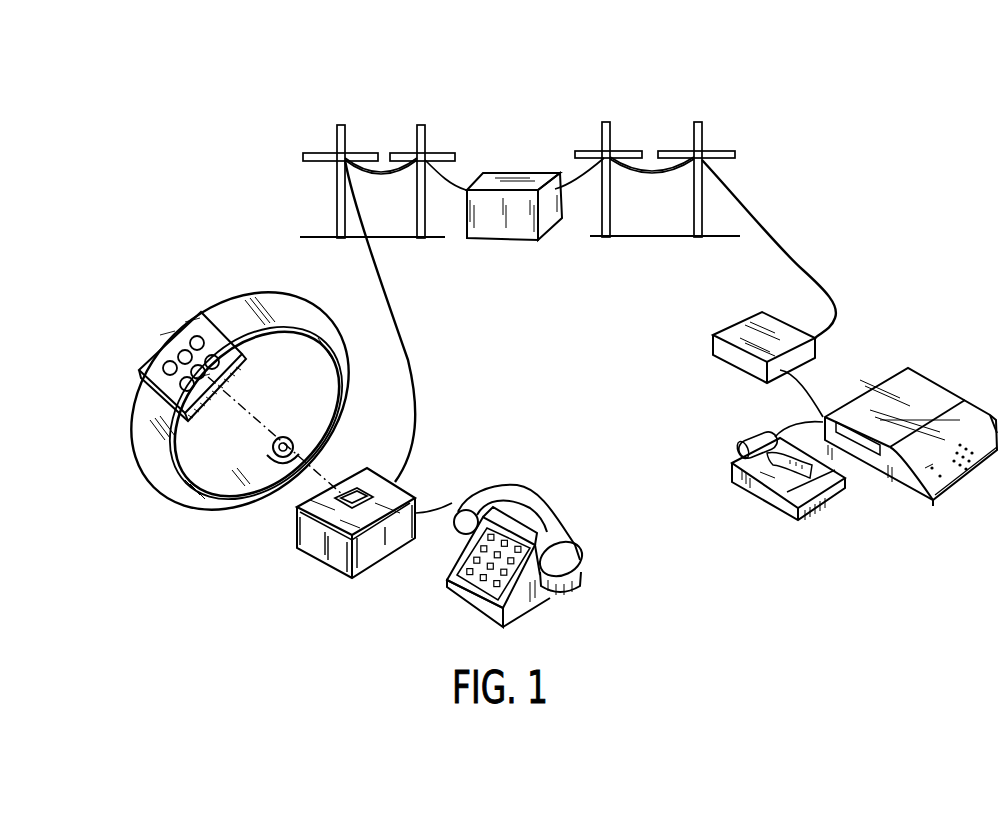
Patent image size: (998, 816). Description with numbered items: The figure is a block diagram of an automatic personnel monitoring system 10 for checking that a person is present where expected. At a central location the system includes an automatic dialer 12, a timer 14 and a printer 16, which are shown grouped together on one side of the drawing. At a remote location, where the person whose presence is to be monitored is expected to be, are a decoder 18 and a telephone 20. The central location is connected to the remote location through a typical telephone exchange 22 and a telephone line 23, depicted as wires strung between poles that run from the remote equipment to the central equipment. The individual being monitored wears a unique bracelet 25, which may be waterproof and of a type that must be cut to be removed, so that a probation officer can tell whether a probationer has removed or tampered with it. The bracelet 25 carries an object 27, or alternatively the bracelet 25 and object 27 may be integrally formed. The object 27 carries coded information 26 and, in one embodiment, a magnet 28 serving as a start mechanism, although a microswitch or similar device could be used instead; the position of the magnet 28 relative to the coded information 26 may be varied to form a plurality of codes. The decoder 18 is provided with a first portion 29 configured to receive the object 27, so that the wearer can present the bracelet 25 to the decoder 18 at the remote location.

The automatic personnel monitoring system 10 is at (510, 66).
The automatic dialer 12 is at (935, 378).
The timer 14 is at (742, 318).
The printer 16 is at (815, 513).
The decoder 18 is at (327, 533).
The telephone 20 is at (547, 597).
The telephone exchange 22 is at (512, 172).
The telephone line 23 is at (387, 170).
The bracelet 25 is at (242, 293).
The coded information 26 is at (219, 356).
The object 27 is at (153, 348).
The magnet 28 is at (178, 348).
The first portion 29 is at (362, 490).